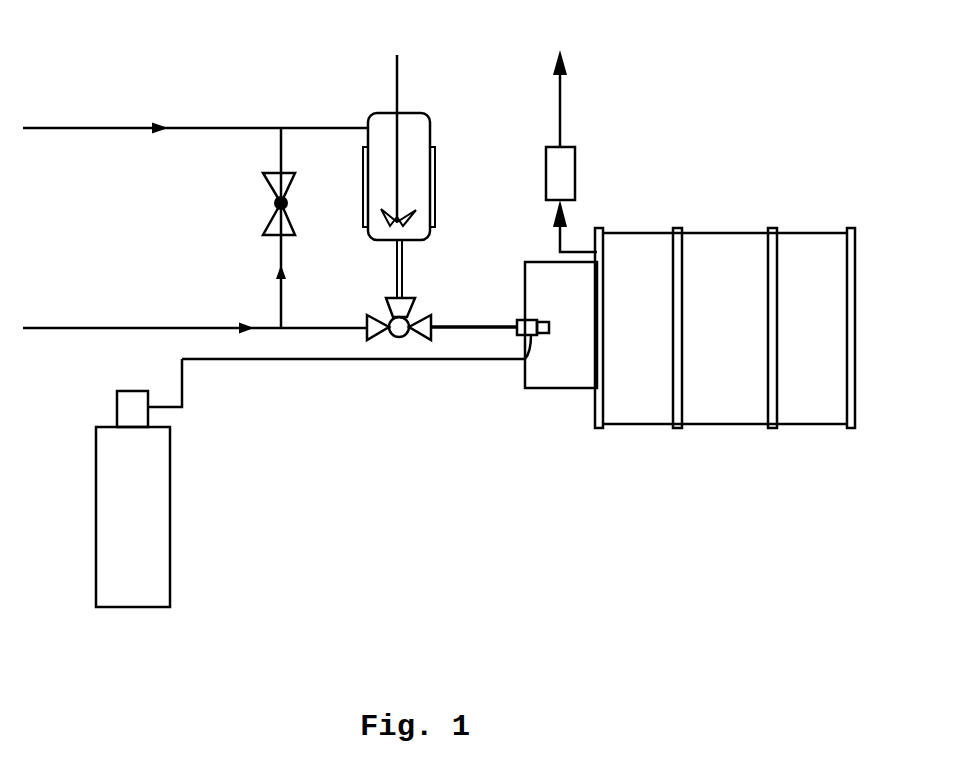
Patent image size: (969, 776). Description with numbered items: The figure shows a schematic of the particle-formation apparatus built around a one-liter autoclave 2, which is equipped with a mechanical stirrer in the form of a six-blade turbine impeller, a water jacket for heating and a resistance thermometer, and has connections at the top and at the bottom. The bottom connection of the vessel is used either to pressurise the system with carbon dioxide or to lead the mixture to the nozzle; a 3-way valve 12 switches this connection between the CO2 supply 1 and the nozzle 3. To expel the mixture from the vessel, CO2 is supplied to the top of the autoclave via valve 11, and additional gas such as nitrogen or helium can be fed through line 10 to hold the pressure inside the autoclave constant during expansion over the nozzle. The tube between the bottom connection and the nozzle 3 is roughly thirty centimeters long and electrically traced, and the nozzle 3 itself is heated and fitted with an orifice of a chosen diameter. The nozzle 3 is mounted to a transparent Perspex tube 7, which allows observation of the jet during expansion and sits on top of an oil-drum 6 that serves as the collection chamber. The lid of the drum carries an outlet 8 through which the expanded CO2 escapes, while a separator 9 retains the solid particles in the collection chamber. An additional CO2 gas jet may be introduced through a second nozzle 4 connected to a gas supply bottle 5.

The CO2 supply 1 is at (195, 295).
The autoclave 2 is at (440, 163).
The nozzle 3 is at (516, 320).
The nozzle 4 is at (515, 365).
The gas supply 5 is at (165, 483).
The oil-drum 6 is at (725, 297).
The Perspex tube 7 is at (585, 377).
The outlet 8 is at (587, 93).
The separator 9 is at (587, 163).
The additional gas supply 10 is at (195, 95).
The valve 11 is at (238, 228).
The 3-way valve 12 is at (371, 290).